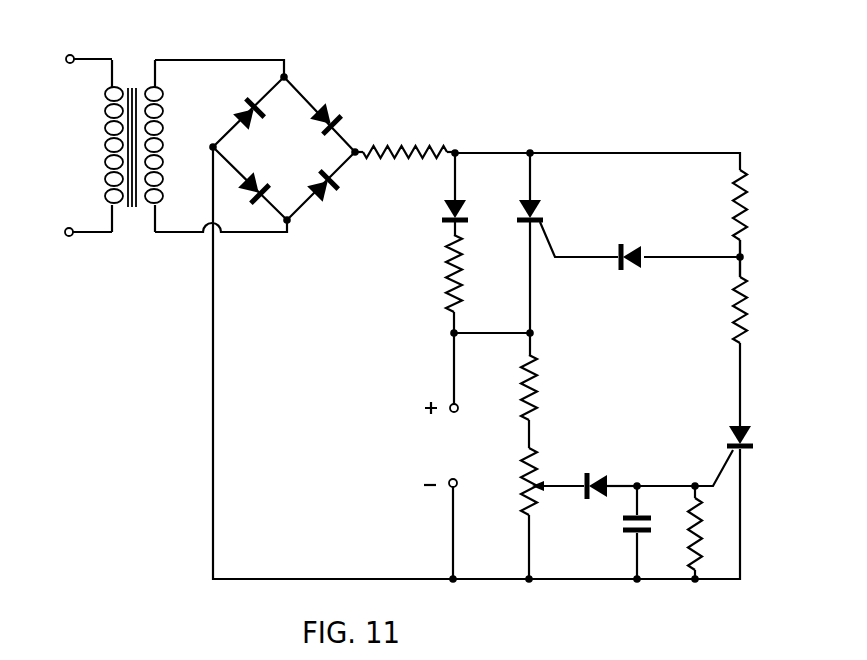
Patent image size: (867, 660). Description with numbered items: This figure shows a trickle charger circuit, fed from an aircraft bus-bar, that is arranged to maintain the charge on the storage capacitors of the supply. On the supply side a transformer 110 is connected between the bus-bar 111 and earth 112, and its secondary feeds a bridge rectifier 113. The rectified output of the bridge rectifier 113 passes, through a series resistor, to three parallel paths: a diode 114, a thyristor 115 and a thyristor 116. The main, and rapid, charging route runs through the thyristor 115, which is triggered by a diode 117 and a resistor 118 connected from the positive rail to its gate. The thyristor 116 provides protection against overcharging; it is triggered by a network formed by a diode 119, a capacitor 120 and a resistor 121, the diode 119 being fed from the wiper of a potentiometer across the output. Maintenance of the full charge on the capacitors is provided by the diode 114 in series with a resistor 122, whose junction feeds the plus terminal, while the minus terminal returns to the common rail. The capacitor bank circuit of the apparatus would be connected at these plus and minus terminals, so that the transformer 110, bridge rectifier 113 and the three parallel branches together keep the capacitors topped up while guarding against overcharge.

The transformer 110 is at (138, 228).
The bus-bar 111 is at (73, 56).
The earth 112 is at (69, 238).
The bridge rectifier 113 is at (300, 160).
The diode 114 is at (440, 211).
The thyristor 115 is at (546, 210).
The thyristor 116 is at (748, 432).
The diode 117 is at (637, 248).
The resistor 118 is at (748, 216).
The diode 119 is at (603, 473).
The capacitor 120 is at (622, 526).
The resistor 121 is at (683, 535).
The resistor 122 is at (445, 275).